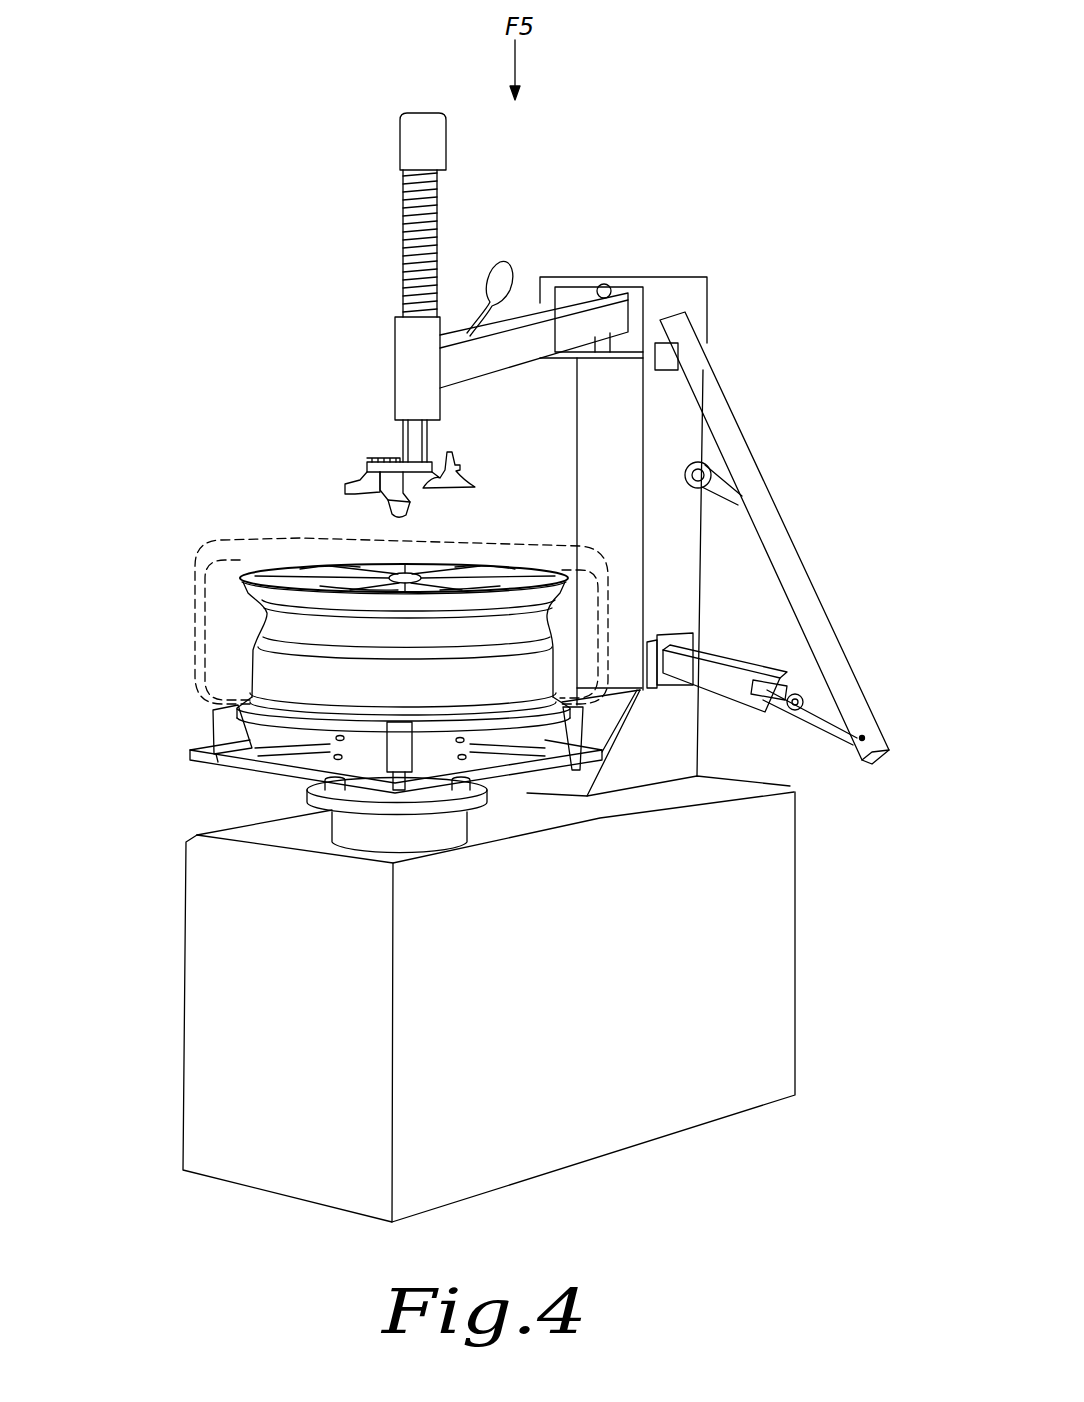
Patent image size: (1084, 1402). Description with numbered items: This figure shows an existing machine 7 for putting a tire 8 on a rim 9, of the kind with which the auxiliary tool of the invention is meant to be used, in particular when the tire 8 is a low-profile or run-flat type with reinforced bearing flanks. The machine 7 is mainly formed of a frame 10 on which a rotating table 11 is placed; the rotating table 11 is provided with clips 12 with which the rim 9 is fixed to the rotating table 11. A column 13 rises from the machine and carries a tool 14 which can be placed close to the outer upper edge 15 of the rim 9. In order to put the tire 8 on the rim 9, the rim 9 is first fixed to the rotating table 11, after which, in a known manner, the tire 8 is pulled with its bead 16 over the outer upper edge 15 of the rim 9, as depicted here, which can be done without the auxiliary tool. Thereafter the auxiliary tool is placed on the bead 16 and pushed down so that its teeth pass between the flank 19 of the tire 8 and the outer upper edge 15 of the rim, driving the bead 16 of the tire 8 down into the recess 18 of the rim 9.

The machine 7 is at (150, 366).
The tire 8 is at (193, 660).
The rim 9 is at (227, 763).
The frame 10 is at (750, 918).
The rotating table 11 is at (307, 683).
The clips 12 is at (213, 723).
The column 13 is at (407, 352).
The tool 14 is at (465, 442).
The outer upper edge 15 is at (260, 570).
The bead 16 is at (237, 573).
The recess 18 is at (260, 628).
The flank 19 is at (585, 550).